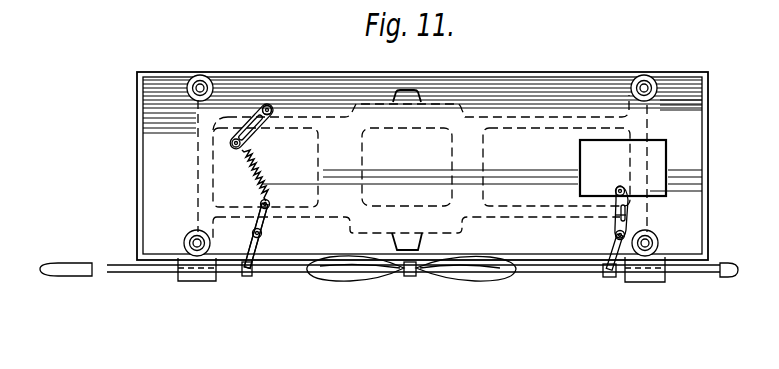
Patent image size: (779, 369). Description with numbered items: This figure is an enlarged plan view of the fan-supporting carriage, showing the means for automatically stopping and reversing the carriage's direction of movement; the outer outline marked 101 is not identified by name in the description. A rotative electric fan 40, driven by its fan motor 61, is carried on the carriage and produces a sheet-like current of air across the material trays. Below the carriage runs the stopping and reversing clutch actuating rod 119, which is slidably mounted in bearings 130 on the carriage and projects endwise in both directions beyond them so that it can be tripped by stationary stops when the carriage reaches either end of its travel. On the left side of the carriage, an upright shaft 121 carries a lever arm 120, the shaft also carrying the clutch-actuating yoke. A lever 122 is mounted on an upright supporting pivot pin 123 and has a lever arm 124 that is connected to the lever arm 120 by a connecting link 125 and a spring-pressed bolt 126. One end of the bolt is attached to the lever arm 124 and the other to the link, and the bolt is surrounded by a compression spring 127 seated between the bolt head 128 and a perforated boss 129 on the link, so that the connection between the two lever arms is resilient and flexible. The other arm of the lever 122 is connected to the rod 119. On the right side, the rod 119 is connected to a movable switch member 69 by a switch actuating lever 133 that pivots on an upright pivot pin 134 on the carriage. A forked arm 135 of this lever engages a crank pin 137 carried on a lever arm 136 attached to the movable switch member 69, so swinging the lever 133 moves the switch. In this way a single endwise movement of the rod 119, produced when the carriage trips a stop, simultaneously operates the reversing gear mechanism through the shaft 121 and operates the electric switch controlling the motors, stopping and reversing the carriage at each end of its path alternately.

The housing 101 is at (500, 68).
The upright shaft 121 is at (270, 117).
The lever arm 120 is at (271, 120).
The connecting link 125 is at (232, 145).
The spring-pressed bolt 126 is at (240, 160).
The perforated boss 129 is at (246, 158).
The compression spring 127 is at (268, 188).
The bolt head 128 is at (259, 199).
The lever arm 124 is at (262, 220).
The upright supporting pivot pin 123 is at (262, 240).
The lever 122 is at (252, 235).
The stopping and reversing clutch actuating rod 119 is at (232, 274).
The bearings 130 is at (192, 278).
The rotative electric fan 40 is at (473, 283).
The fan motor 61 is at (447, 233).
The movable switch member 69 is at (618, 186).
The forked arm 135 is at (617, 217).
The lever arm 136 is at (628, 192).
The crank pin 137 is at (632, 205).
The upright pivot pin 134 is at (615, 233).
The switch actuating lever 133 is at (600, 264).